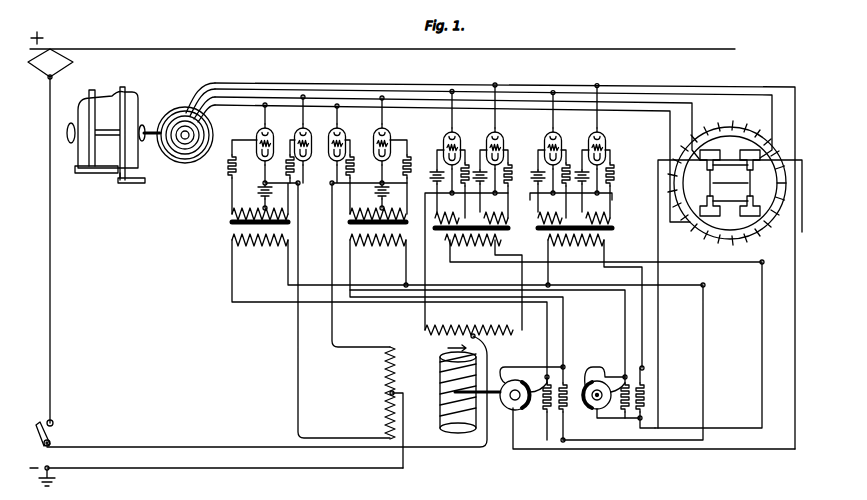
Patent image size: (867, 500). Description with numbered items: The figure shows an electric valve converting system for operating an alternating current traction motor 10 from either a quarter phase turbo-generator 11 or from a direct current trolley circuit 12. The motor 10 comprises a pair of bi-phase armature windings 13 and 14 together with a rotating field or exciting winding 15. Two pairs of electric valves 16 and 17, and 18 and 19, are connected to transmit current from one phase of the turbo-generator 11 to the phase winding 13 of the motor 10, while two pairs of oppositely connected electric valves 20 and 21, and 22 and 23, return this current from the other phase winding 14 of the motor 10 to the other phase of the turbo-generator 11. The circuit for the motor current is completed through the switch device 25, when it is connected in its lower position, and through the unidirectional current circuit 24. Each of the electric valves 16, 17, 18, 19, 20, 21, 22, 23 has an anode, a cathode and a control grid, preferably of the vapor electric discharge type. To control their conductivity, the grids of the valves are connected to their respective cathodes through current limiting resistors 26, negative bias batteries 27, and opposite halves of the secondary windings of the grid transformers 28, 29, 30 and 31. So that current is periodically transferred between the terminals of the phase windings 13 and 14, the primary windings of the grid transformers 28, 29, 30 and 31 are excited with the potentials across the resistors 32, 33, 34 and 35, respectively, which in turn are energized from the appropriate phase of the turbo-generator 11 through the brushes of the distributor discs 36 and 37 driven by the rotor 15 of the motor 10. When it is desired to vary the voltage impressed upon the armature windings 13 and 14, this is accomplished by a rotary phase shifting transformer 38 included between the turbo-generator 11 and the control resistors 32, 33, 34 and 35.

The alternating current traction motor 10 is at (455, 389).
The quarter phase turbo-generator 11 is at (162, 108).
The direct current trolley circuit 12 is at (113, 49).
The phase winding 13 is at (384, 385).
The phase winding 14 is at (452, 327).
The rotating field winding 15 is at (445, 408).
The electric valve 16 is at (258, 130).
The electric valve 17 is at (298, 128).
The electric valve 18 is at (333, 130).
The electric valve 19 is at (375, 128).
The electric valve 20 is at (456, 131).
The electric valve 21 is at (501, 132).
The electric valve 22 is at (557, 132).
The electric valve 23 is at (605, 132).
The unidirectional current circuit 24 is at (190, 447).
The switch device 25 is at (53, 426).
The current limiting resistor 26 is at (228, 164).
The negative bias battery 27 is at (258, 190).
The grid transformer 28 is at (230, 220).
The grid transformer 29 is at (410, 220).
The grid transformer 30 is at (503, 234).
The grid transformer 31 is at (613, 228).
The control resistor 32 is at (542, 415).
The control resistor 33 is at (566, 415).
The control resistor 34 is at (621, 414).
The control resistor 35 is at (646, 397).
The distributor disc 36 is at (528, 382).
The distributor disc 37 is at (592, 383).
The rotary phase shifting transformer 38 is at (738, 126).